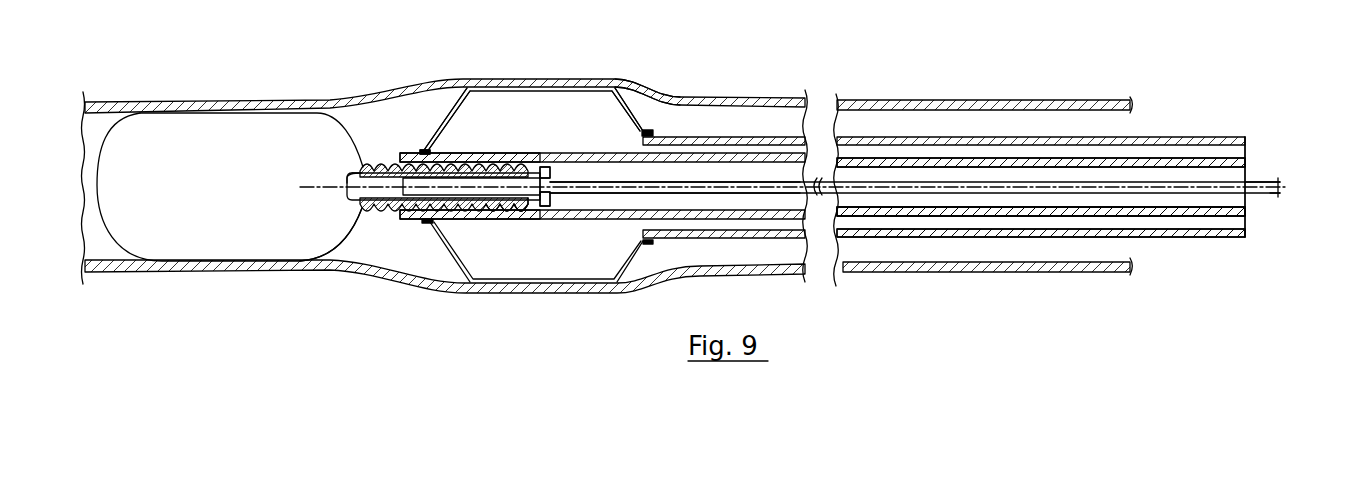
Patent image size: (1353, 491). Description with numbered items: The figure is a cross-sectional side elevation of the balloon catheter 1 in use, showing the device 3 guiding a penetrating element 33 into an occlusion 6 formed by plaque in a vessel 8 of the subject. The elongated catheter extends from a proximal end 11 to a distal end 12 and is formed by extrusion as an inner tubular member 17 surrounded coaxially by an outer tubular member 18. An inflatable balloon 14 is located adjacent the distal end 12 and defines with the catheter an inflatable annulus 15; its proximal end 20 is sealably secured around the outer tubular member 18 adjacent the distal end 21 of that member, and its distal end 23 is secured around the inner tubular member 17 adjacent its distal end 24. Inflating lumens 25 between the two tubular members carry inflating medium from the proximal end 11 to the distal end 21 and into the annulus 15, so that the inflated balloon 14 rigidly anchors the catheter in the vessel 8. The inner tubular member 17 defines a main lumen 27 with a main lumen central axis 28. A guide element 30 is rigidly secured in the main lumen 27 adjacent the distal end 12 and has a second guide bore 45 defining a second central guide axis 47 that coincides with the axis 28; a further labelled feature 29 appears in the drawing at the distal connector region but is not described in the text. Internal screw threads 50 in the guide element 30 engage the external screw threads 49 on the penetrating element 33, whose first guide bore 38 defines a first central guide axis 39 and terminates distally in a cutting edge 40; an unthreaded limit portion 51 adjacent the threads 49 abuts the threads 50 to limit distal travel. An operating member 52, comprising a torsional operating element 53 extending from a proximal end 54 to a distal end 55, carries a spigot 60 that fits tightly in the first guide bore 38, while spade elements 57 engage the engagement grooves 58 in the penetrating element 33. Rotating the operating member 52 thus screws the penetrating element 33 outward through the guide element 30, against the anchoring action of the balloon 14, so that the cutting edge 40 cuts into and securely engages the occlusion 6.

The balloon catheter 1 is at (887, 123).
The device 3 is at (428, 253).
The occlusion 6 is at (207, 140).
The vessel 8 is at (375, 242).
The proximal end 11 is at (1245, 150).
The distal end 12 is at (400, 152).
The inflatable balloon 14 is at (643, 242).
The inflatable annulus 15 is at (543, 103).
The inner tubular member 17 is at (870, 213).
The outer tubular member 18 is at (960, 138).
The proximal end of the balloon 20 is at (648, 130).
The distal end of the outer tubular member 21 is at (640, 138).
The distal end of the balloon 23 is at (425, 150).
The distal end of the inner tubular member 24 is at (412, 153).
The inflating lumens 25 is at (1053, 150).
The main lumen 27 is at (965, 198).
The main lumen central axis 28 is at (1252, 193).
The lower connector wall 29 is at (443, 222).
The guide element 30 is at (470, 210).
The penetrating element 33 is at (487, 170).
The first guide bore 38 is at (353, 212).
The first central guide axis 39 is at (317, 188).
The distal cutting edge 40 is at (347, 168).
The second guide bore 45 is at (405, 214).
The second central guide axis 47 is at (328, 187).
The external screw threads 49 is at (505, 207).
The internal screw threads 50 is at (455, 168).
The unthreaded limit portion 51 is at (517, 207).
The operating member 52 is at (752, 183).
The operating element 53 is at (1262, 178).
The proximal end of the operating element 54 is at (1272, 192).
The distal end of the operating element 55 is at (550, 193).
The spade elements 57 is at (545, 168).
The engagement grooves 58 is at (530, 170).
The spigot 60 is at (460, 203).